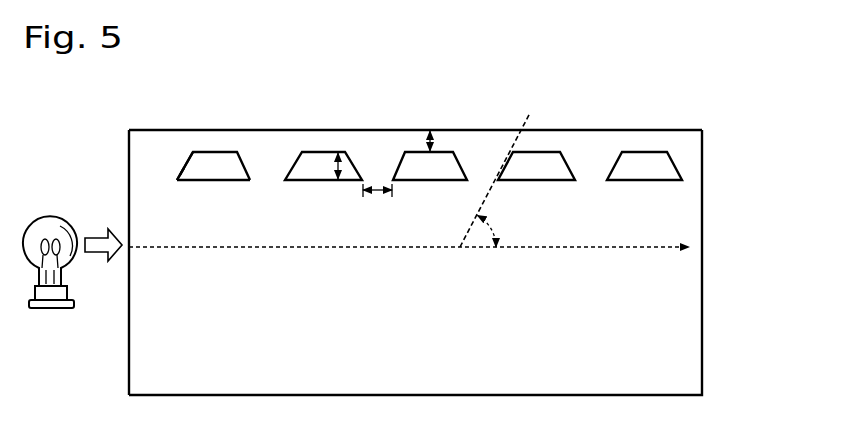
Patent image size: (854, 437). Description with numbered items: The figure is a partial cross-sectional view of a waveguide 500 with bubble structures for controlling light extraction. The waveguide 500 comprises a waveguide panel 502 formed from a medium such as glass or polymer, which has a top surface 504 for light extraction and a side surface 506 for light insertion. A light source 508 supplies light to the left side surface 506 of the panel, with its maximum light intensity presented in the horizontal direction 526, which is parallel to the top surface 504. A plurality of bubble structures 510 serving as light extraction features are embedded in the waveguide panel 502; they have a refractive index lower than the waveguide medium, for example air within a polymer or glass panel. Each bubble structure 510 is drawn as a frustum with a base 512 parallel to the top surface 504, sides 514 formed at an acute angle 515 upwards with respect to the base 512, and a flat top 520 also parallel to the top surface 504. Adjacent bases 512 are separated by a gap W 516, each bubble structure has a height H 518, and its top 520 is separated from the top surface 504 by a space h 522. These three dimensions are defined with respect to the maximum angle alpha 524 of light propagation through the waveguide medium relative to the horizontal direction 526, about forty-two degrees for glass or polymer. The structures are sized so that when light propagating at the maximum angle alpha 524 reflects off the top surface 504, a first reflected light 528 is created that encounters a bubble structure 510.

The waveguide 500 is at (623, 65).
The waveguide panel 502 is at (688, 379).
The top surface 504 is at (672, 128).
The side surface 506 is at (125, 154).
The light source 508 is at (56, 308).
The bubble structures 510 is at (229, 158).
The base 512 is at (231, 181).
The sides 514 is at (189, 166).
The acute angle 515 is at (198, 168).
The gap (W) 516 is at (377, 198).
The height (H) 518 is at (336, 163).
The top 520 is at (309, 150).
The space (h) 522 is at (434, 146).
The maximum angle (α) 524 is at (489, 221).
The first horizontal direction 526 is at (667, 241).
The first reflected light 528 is at (520, 147).